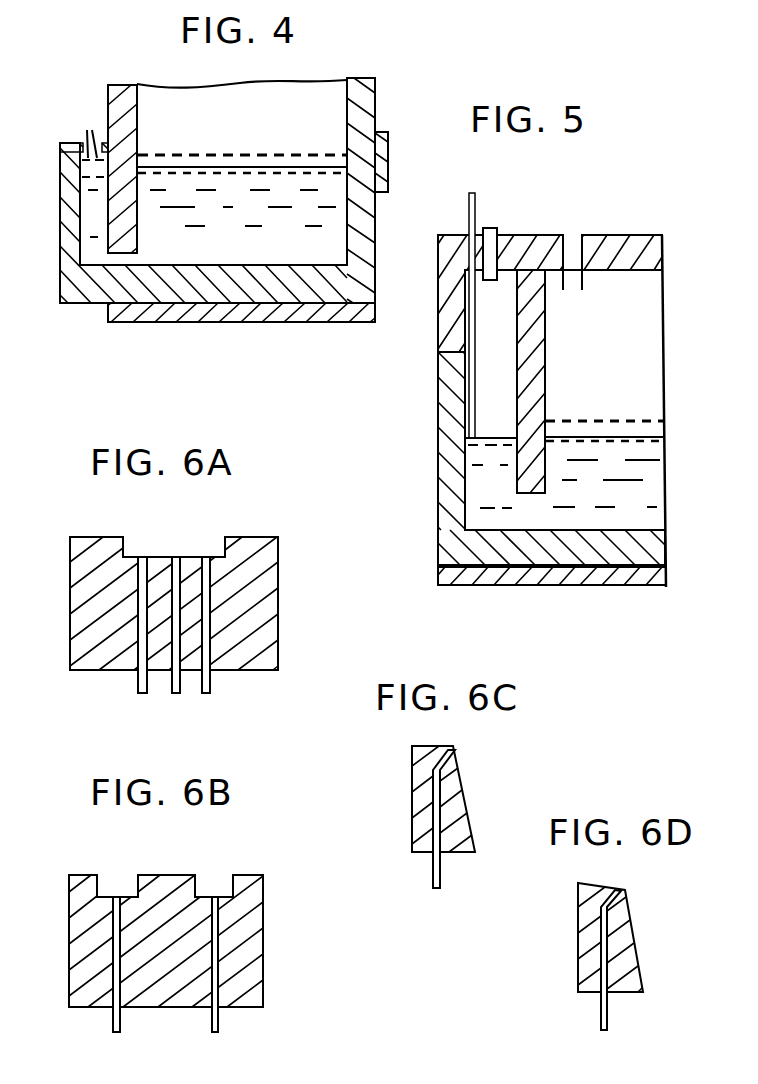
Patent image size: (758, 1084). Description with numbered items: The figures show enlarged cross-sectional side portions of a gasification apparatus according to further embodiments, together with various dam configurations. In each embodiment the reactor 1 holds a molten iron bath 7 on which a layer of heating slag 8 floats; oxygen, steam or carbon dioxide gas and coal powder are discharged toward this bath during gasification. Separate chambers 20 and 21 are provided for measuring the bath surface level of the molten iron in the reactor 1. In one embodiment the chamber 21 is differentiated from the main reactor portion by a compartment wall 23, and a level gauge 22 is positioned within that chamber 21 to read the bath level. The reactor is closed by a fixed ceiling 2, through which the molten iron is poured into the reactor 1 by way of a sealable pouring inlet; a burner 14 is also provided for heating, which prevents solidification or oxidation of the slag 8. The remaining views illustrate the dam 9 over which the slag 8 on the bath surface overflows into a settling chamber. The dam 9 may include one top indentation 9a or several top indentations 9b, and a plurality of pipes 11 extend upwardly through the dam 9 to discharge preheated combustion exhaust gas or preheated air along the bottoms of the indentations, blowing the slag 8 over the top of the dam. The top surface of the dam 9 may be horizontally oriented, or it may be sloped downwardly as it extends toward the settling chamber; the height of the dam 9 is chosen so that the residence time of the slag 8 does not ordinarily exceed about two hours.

In FIG. 4, the reactor 1 is at (367, 229).
In FIG. 5, the reactor 1 is at (438, 376).
In FIG. 5, the fixed ceiling 2 is at (438, 289).
In FIG. 4, the molten iron bath 7 is at (240, 217).
In FIG. 5, the molten iron bath 7 is at (583, 503).
In FIG. 4, the slag 8 is at (247, 154).
In FIG. 5, the slag 8 is at (618, 420).
In FIG. 6A, the dam 9 is at (72, 590).
In FIG. 6B, the dam 9 is at (73, 925).
In FIG. 6C, the dam 9 is at (417, 798).
In FIG. 6D, the dam 9 is at (583, 945).
In FIG. 6A, the top indentation 9a is at (127, 543).
In FIG. 6B, the top indentations 9b is at (100, 883).
In FIG. 6A, the pipes 11 is at (138, 683).
In FIG. 6B, the pipes 11 is at (112, 1020).
In FIG. 6C, the pipes 11 is at (432, 873).
In FIG. 6D, the pipes 11 is at (600, 1008).
In FIG. 5, the burner 14 is at (491, 228).
In FIG. 4, the chamber 20 is at (106, 218).
In FIG. 5, the chamber 21 is at (571, 242).
In FIG. 5, the level gauge 22 is at (478, 358).
In FIG. 5, the compartment wall 23 is at (548, 353).